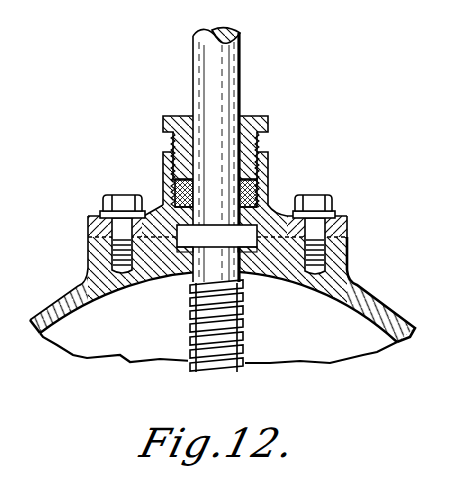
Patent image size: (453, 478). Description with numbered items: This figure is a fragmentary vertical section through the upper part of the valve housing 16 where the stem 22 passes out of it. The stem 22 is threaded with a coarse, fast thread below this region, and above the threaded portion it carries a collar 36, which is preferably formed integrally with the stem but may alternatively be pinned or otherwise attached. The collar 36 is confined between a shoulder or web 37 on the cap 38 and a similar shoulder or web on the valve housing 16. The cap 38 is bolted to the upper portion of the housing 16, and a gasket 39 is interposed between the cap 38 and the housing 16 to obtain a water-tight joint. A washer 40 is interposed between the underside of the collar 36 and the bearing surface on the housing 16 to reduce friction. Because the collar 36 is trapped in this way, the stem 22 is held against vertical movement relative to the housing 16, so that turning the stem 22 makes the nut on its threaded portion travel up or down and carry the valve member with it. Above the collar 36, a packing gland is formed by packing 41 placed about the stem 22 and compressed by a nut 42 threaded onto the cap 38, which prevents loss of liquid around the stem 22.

The valve housing 16 is at (385, 312).
The stem 22 is at (243, 346).
The collar 36 is at (176, 272).
The shoulder or web 37 is at (176, 206).
The cap 38 is at (168, 163).
The gasket 39 is at (345, 240).
The washer 40 is at (247, 255).
The packing 41 is at (258, 196).
The nut 42 is at (270, 127).